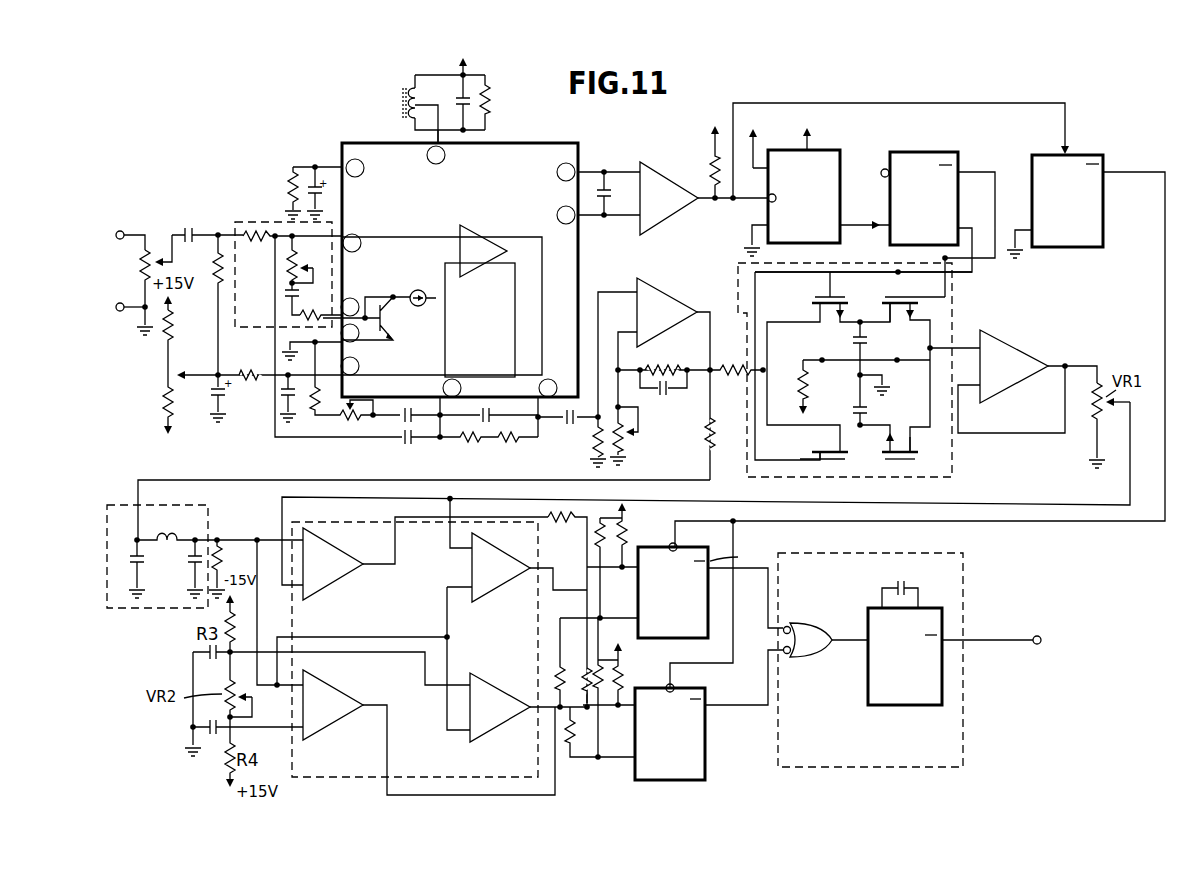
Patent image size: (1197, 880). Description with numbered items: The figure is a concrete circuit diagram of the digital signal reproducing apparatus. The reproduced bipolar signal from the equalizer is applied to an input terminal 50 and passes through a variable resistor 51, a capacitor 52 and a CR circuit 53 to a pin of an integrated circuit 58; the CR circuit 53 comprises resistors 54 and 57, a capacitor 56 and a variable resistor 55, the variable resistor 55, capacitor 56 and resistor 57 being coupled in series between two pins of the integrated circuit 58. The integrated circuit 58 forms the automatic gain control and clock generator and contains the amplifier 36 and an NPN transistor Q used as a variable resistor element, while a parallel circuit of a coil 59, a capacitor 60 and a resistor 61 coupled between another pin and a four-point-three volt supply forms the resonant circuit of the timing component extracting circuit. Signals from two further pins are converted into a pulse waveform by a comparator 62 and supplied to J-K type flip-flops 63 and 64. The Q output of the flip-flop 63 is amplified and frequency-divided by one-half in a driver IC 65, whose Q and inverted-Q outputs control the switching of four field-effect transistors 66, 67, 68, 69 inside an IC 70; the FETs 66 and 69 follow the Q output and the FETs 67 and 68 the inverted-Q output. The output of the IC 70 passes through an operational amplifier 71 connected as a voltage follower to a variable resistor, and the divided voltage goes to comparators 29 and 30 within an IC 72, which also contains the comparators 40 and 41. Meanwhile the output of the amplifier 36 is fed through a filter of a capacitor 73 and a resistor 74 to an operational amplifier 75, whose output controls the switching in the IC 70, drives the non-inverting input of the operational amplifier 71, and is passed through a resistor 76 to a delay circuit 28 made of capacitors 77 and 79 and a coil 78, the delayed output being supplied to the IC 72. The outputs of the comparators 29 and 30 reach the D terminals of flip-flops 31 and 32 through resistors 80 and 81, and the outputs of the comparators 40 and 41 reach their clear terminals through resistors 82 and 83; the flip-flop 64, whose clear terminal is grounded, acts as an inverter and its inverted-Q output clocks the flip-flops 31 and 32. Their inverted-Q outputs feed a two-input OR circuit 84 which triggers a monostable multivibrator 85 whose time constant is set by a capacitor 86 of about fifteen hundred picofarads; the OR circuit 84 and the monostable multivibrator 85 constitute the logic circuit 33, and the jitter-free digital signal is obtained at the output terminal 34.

The delay circuit 28 is at (143, 611).
The comparator 29 is at (334, 560).
The comparator 30 is at (499, 564).
The flip-flop 31 is at (693, 548).
The flip-flop 32 is at (652, 688).
The logic circuit 33 is at (966, 556).
The output terminal 34 is at (1038, 636).
The amplifier 36 is at (480, 271).
The comparator 40 is at (337, 702).
The comparator 41 is at (487, 688).
The input terminal 50 is at (120, 231).
The variable resistor 51 is at (140, 263).
The capacitor 52 is at (188, 227).
The CR circuit 53 is at (268, 221).
The resistor 54 is at (265, 243).
The variable resistor 55 is at (298, 258).
The capacitor 56 is at (284, 296).
The resistor 57 is at (300, 318).
The integrated circuit 58 is at (549, 143).
The coil 59 is at (406, 95).
The capacitor 60 is at (469, 93).
The resistor 61 is at (489, 104).
The comparator 62 is at (665, 174).
The J-K type flip-flop 63 is at (838, 150).
The J-K type flip-flop 64 is at (1092, 155).
The driver IC 65 is at (924, 152).
The field-effect transistor 66 is at (905, 305).
The field-effect transistor 67 is at (812, 298).
The field-effect transistor 68 is at (882, 459).
The field-effect transistor 69 is at (800, 459).
The IC 70 is at (866, 377).
The operational amplifier 71 is at (1005, 341).
The IC 72 is at (318, 778).
The capacitor 73 is at (569, 428).
The resistor 74 is at (592, 447).
The operational amplifier 75 is at (666, 286).
The resistor 76 is at (705, 436).
The capacitor 77 is at (127, 567).
The coil 78 is at (168, 533).
The capacitor 79 is at (190, 562).
The resistor 80 is at (567, 607).
The resistor 81 is at (585, 667).
The resistor 82 is at (558, 664).
The resistor 83 is at (578, 760).
The 2-input OR circuit 84 is at (806, 622).
The monostable multivibrator 85 is at (869, 702).
The capacitor 86 is at (896, 590).